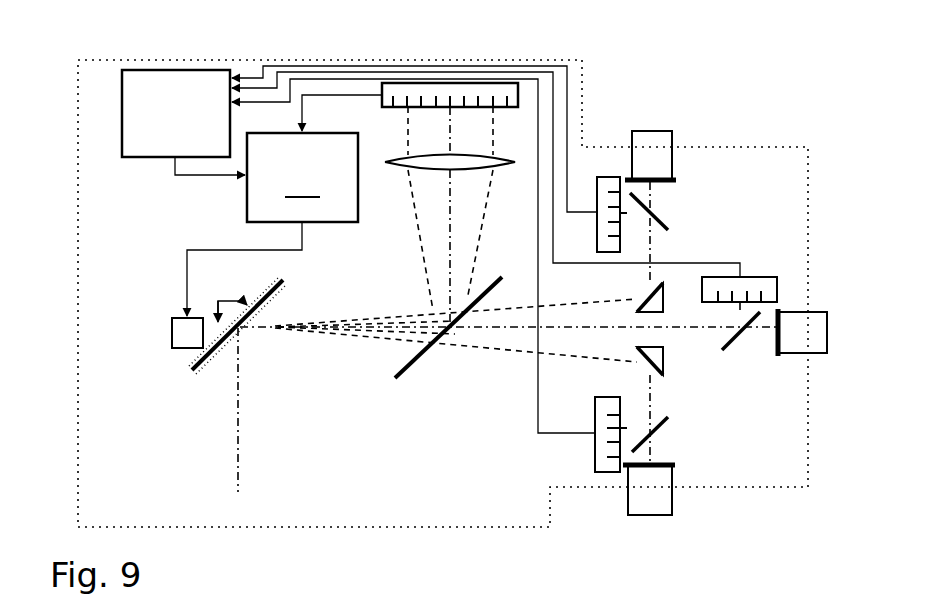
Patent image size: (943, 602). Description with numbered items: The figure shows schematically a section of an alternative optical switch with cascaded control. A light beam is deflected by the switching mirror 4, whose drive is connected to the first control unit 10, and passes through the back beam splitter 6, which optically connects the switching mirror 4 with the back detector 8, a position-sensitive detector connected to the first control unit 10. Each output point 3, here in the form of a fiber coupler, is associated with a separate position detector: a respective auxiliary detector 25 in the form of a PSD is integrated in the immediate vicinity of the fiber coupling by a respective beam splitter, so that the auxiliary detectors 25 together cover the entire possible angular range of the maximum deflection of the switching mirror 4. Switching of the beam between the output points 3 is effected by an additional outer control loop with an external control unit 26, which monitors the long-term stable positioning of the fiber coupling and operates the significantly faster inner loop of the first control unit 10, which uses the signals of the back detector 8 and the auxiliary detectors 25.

The output point 3 is at (655, 131).
The switching mirror 4 is at (197, 357).
The back beam splitter 6 is at (411, 383).
The back detector 8 is at (465, 82).
The first control unit 10 is at (302, 177).
The auxiliary detector 25 is at (612, 176).
The external control unit 26 is at (176, 113).